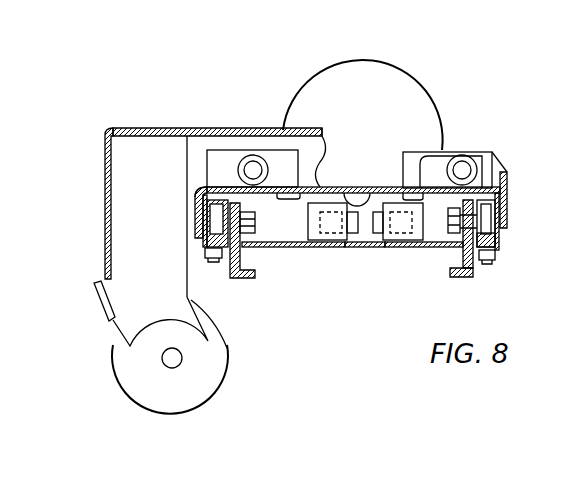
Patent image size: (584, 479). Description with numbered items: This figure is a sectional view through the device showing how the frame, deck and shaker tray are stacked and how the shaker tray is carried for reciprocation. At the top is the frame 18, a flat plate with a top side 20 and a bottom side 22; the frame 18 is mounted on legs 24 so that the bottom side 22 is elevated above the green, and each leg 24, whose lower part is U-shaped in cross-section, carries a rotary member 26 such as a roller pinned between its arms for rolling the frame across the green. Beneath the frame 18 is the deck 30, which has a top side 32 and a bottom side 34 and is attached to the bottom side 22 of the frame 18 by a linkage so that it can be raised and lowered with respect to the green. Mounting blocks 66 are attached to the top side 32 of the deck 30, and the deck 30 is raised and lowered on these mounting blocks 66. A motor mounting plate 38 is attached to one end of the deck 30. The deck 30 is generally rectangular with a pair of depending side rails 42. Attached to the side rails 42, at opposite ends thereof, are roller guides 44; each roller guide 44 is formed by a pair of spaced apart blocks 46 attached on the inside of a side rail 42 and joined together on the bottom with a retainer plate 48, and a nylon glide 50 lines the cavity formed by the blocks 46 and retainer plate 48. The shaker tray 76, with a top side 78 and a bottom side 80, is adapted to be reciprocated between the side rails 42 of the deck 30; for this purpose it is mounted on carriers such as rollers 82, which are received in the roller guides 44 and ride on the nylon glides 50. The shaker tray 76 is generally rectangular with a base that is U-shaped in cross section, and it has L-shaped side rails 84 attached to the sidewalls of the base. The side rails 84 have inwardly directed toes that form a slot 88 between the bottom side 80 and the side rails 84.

The frame 18 is at (211, 159).
The top side 20 is at (133, 128).
The bottom side 22 is at (250, 130).
The leg 24 is at (96, 253).
The rotary member 26 is at (230, 360).
The deck 30 is at (507, 173).
The top side 32 is at (368, 194).
The bottom side 34 is at (377, 190).
The motor mounting plate 38 is at (413, 80).
The side rail 42 is at (197, 205).
The roller guide 44 is at (218, 270).
The block 46 is at (503, 246).
The retainer plate 48 is at (248, 257).
The nylon glide 50 is at (497, 218).
The mounting block 66 is at (205, 153).
The shaker tray 76 is at (365, 255).
The top side 78 is at (437, 243).
The bottom side 80 is at (333, 248).
The roller 82 is at (197, 230).
The side rail 84 is at (467, 275).
The slot 88 is at (400, 255).